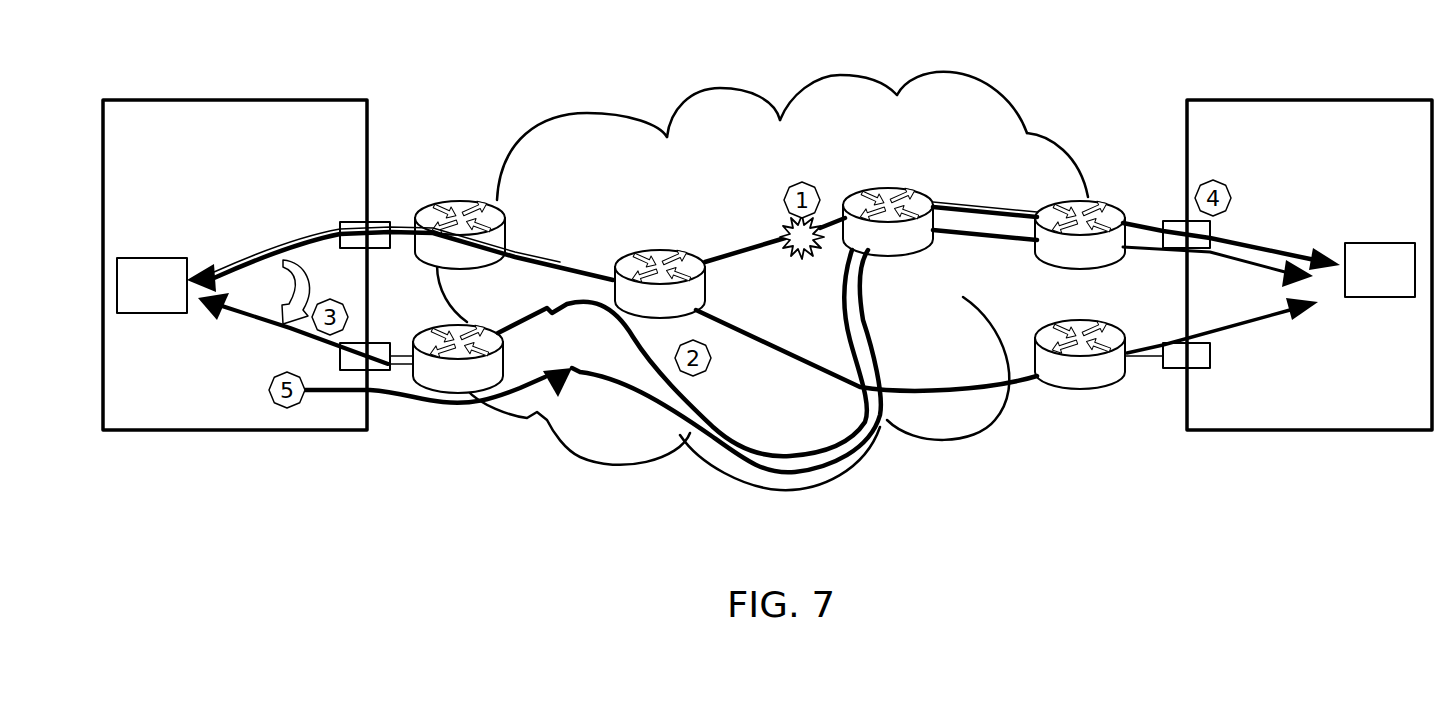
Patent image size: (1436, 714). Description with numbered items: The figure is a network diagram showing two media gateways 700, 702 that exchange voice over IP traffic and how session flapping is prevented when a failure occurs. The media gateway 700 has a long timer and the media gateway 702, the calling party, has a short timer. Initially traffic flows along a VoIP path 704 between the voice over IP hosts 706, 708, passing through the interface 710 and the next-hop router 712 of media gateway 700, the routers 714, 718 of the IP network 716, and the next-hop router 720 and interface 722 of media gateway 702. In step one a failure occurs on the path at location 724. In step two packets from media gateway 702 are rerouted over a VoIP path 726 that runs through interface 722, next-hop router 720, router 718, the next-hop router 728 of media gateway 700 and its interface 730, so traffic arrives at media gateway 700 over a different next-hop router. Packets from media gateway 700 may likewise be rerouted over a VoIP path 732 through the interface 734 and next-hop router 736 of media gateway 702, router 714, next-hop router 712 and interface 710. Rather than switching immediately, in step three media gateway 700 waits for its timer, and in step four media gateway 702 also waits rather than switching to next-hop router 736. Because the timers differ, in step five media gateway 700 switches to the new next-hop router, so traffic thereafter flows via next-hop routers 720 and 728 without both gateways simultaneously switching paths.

The media gateway 700 is at (243, 98).
The media gateway 702 is at (1328, 98).
The VoIP path 704 is at (752, 253).
The voice over IP host 706 is at (154, 257).
The voice over IP host 708 is at (1380, 242).
The interface 710 is at (381, 221).
The next-hop router 712 is at (460, 200).
The router 714 is at (622, 253).
The IP network 716 is at (808, 78).
The router 718 is at (903, 186).
The next-hop router 720 is at (1097, 199).
The interface 722 is at (1173, 220).
The location 724 is at (803, 262).
The VoIP path 726 is at (843, 305).
The next-hop router 728 is at (432, 393).
The interface 730 is at (383, 342).
The VoIP path 732 is at (926, 386).
The interface 734 is at (1173, 370).
The next-hop router 736 is at (1080, 400).